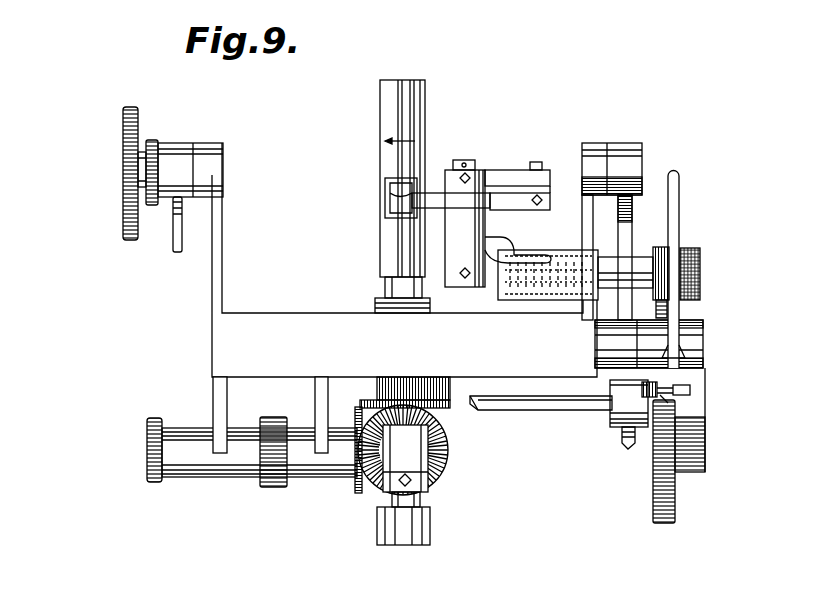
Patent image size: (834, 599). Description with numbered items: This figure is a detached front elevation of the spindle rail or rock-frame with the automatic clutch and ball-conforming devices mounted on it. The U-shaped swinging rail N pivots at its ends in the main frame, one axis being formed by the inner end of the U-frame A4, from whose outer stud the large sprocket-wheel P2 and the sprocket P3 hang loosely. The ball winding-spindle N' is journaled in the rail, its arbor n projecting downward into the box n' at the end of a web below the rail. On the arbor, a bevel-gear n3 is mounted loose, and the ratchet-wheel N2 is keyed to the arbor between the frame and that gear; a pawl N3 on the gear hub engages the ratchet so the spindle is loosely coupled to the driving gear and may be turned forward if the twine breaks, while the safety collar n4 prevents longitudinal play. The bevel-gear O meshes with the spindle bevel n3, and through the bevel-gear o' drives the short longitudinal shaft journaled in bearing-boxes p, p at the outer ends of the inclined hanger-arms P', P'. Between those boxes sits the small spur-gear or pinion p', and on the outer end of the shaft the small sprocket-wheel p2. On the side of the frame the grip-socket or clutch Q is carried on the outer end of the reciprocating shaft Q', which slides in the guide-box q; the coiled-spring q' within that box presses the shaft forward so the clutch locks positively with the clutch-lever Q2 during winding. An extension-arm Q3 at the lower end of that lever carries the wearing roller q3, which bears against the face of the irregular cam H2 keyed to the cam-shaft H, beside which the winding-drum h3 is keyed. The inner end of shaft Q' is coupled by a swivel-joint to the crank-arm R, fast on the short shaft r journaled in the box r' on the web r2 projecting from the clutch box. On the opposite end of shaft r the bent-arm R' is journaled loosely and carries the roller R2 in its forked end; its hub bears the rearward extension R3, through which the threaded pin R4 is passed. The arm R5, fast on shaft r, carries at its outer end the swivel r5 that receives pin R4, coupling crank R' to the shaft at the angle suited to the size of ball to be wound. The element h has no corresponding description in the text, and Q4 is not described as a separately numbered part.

The swinging rail N is at (404, 260).
The ball winding-spindle N' is at (388, 196).
The ratchet-wheel N2 is at (395, 390).
The pawl N3 is at (446, 378).
The sprocket-wheel P2 is at (150, 173).
The sprocket P3 is at (153, 134).
The hanger-arm P' is at (270, 415).
The U-frame A4 is at (617, 483).
The crank-arm R is at (451, 253).
The bent-arm R' is at (362, 228).
The roller R2 is at (385, 198).
The rearward extension R3 is at (503, 198).
The screw-threaded pin R4 is at (543, 203).
The arm R5 is at (517, 178).
The short shaft r is at (465, 204).
The box r' is at (454, 237).
The web r2 is at (524, 250).
The swivel r5 is at (548, 195).
The guide-box q is at (548, 262).
The coiled-spring q' is at (526, 318).
The grip-socket Q is at (685, 270).
The reciprocating shaft Q' is at (630, 249).
The clutch-lever Q2 is at (672, 200).
The extension-arm Q3 is at (670, 386).
The collar Q4 is at (693, 390).
The wearing roller q3 is at (670, 407).
The cam-shaft H is at (541, 422).
The irregular-cam H2 is at (678, 508).
The bracket h is at (618, 425).
The winding-drum h3 is at (703, 417).
The bevel-gear O is at (446, 458).
The bevel-gear o' is at (345, 465).
The arbor n is at (424, 504).
The box n' is at (419, 526).
The bevel-gear n3 is at (443, 420).
The safety collar n4 is at (443, 482).
The bearing-box p is at (259, 475).
The spur-gear p' is at (271, 470).
The sprocket-wheel p2 is at (154, 467).